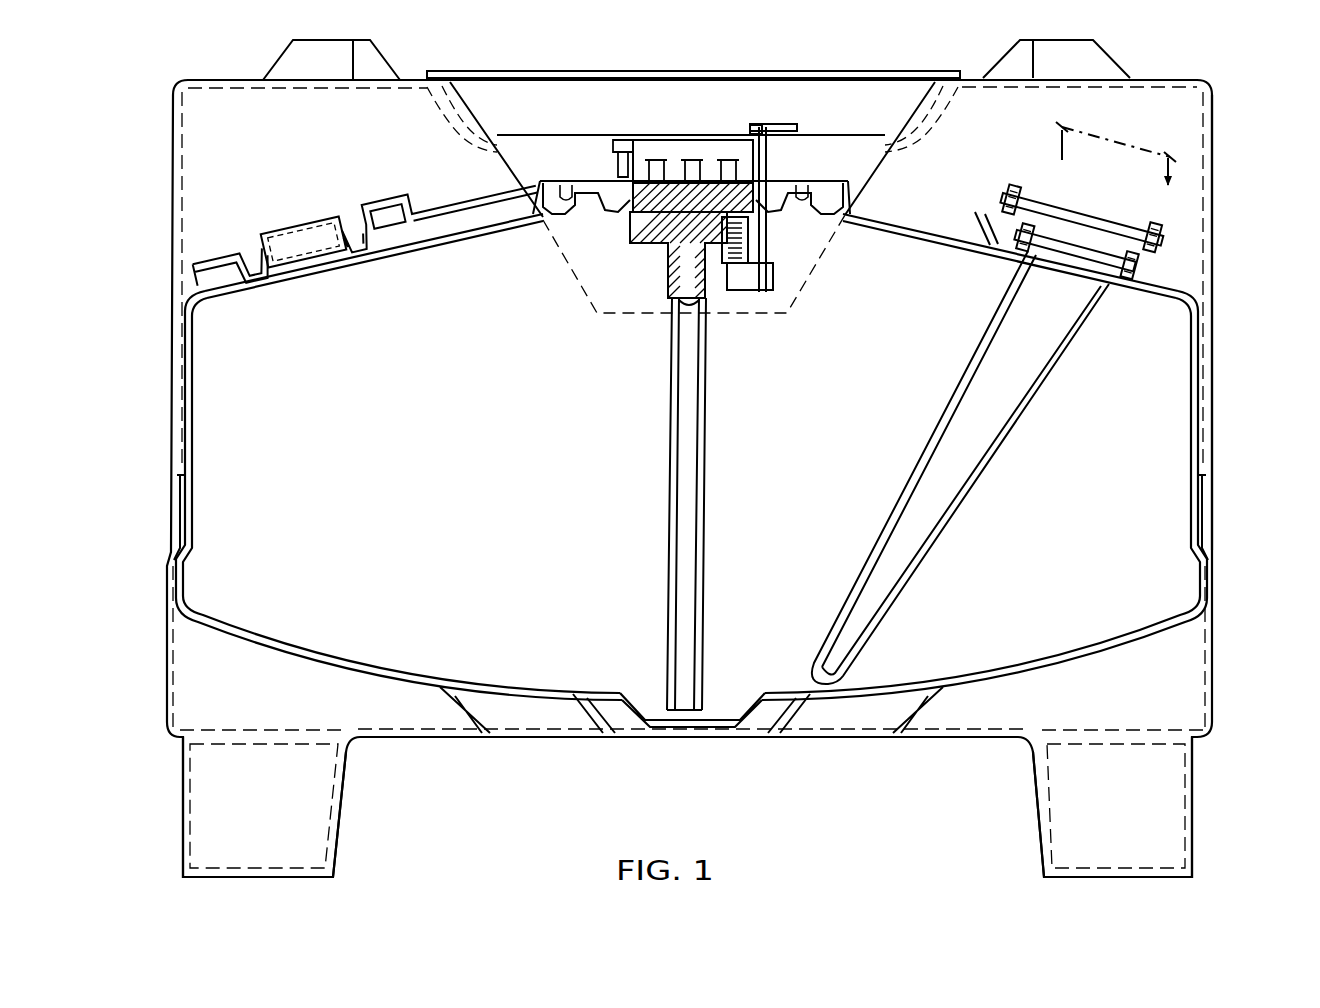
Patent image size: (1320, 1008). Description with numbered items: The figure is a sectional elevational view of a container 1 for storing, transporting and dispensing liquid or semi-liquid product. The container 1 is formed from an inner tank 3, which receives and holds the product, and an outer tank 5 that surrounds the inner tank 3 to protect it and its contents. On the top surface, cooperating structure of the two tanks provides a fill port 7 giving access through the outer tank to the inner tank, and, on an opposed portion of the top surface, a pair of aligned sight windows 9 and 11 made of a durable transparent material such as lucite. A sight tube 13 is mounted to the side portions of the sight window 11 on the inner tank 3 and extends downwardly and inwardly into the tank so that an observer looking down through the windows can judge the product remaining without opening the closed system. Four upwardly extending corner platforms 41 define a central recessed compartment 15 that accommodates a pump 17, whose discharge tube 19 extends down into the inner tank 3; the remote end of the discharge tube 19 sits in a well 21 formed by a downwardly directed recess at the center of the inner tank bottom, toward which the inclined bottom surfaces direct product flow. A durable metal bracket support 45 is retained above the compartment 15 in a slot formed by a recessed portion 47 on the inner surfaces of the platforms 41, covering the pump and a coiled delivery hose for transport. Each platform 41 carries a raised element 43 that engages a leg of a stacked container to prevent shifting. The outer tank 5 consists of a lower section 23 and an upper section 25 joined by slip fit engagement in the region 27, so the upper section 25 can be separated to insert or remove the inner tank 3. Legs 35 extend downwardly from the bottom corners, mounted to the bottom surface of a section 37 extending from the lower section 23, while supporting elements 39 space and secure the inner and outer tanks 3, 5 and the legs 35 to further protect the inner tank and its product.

The container 1 is at (148, 280).
The inner tank 3 is at (490, 233).
The outer tank 5 is at (482, 220).
The fill port 7 is at (297, 225).
The sight window 9 is at (1040, 198).
The sight window 11 is at (993, 210).
The sight tube 13 is at (1052, 363).
The compartment 15 is at (610, 272).
The pump 17 is at (770, 118).
The discharge tube 19 is at (706, 500).
The well 21 is at (718, 700).
The lower section 23 is at (1213, 583).
The upper section 25 is at (1215, 447).
The slip fit region 27 is at (1222, 510).
The legs 35 is at (236, 835).
The section 37 is at (178, 692).
The supporting elements 39 is at (455, 702).
The platforms 41 is at (225, 76).
The raised element 43 is at (292, 44).
The bracket support 45 is at (496, 70).
The recessed portion 47 is at (478, 124).